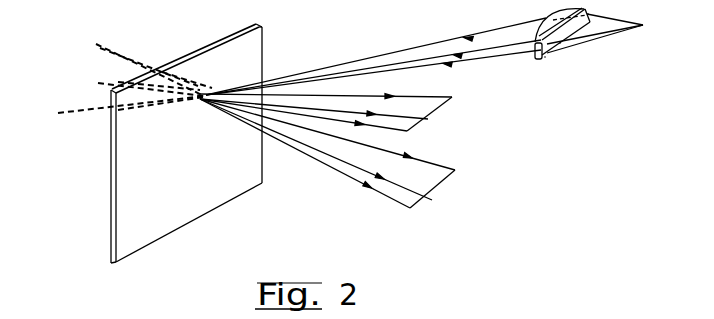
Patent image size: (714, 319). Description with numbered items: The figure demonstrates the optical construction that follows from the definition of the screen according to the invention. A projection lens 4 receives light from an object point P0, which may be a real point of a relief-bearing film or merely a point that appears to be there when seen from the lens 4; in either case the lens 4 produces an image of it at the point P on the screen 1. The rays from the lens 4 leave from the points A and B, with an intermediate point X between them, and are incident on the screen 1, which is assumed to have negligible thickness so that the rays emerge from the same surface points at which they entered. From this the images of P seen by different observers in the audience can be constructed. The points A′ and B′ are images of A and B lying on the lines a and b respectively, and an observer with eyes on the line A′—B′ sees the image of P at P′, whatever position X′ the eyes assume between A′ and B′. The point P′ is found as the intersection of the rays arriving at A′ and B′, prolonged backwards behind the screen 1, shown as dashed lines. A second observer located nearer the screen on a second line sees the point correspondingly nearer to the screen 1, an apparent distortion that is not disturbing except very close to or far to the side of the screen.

The screen 1 is at (128, 249).
The projection lens 4 is at (569, 15).
The object point P0 is at (599, 29).
The point A of lens aperture A is at (545, 57).
The point B of lens aperture B is at (589, 14).
The intermediate point X on line A—B X is at (560, 43).
The image point P is at (125, 107).
The image point P′ is at (153, 57).
The point A′ is at (430, 200).
The eye position X′ is at (434, 203).
The point B′ is at (464, 183).